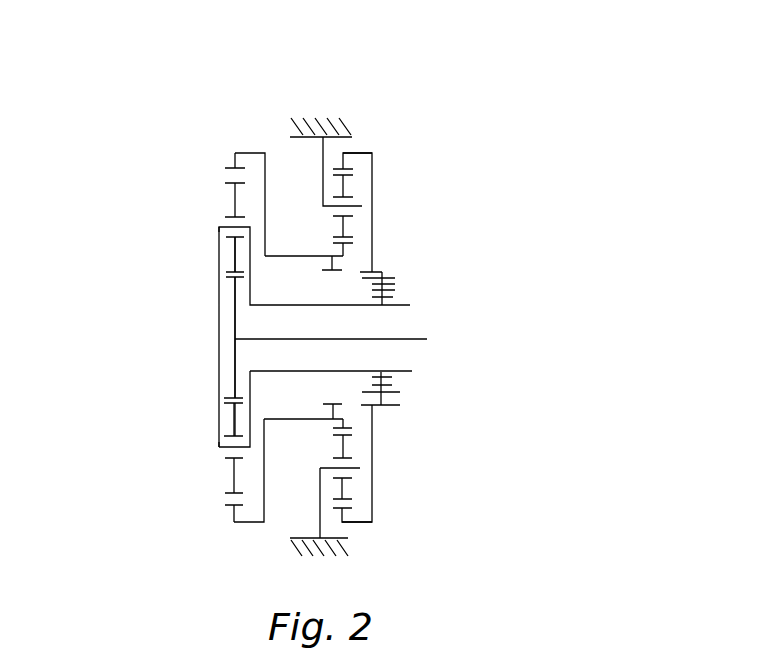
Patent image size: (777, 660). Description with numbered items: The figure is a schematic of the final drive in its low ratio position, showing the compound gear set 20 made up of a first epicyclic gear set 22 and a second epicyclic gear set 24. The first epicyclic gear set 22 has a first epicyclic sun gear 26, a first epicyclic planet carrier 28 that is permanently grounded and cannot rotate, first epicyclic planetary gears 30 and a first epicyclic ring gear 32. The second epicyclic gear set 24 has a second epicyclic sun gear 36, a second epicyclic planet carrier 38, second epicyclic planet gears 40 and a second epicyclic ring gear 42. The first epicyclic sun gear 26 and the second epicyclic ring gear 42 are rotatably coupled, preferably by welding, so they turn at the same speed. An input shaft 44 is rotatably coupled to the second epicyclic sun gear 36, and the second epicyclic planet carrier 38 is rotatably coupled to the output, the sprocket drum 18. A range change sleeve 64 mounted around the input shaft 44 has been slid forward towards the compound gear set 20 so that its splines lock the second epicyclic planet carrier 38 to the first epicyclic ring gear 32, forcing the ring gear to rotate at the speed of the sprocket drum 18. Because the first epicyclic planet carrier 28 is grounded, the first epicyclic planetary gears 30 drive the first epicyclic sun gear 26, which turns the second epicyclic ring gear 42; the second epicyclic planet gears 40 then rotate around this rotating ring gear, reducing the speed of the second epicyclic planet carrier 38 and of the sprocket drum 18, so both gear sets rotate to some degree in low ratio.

The compound gear set 20 is at (545, 77).
The sprocket drum 18 is at (219, 339).
The first epicyclic gear set 22 is at (400, 181).
The second epicyclic gear set 24 is at (187, 435).
The first epicyclic sun gear 26 is at (343, 250).
The first epicyclic planet carrier 28 is at (323, 152).
The first epicyclic planetary gears 30 is at (343, 228).
The first epicyclic ring gear 32 is at (372, 170).
The second epicyclic sun gear 36 is at (235, 290).
The second epicyclic planet carrier 38 is at (219, 227).
The second epicyclic planet gears 40 is at (235, 197).
The second epicyclic ring gear 42 is at (248, 152).
The input shaft 44 is at (418, 339).
The range change sleeve 64 is at (395, 284).